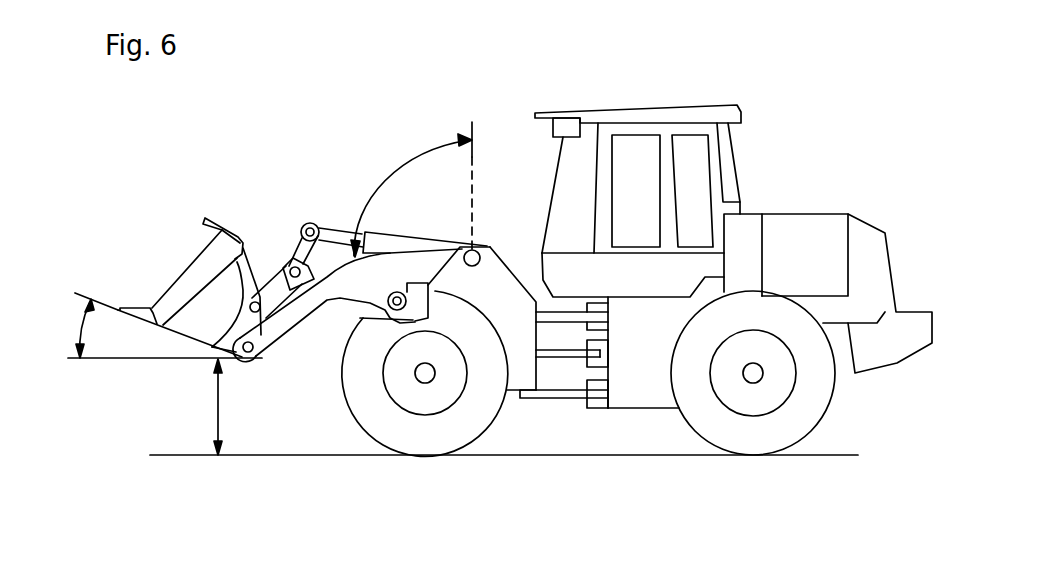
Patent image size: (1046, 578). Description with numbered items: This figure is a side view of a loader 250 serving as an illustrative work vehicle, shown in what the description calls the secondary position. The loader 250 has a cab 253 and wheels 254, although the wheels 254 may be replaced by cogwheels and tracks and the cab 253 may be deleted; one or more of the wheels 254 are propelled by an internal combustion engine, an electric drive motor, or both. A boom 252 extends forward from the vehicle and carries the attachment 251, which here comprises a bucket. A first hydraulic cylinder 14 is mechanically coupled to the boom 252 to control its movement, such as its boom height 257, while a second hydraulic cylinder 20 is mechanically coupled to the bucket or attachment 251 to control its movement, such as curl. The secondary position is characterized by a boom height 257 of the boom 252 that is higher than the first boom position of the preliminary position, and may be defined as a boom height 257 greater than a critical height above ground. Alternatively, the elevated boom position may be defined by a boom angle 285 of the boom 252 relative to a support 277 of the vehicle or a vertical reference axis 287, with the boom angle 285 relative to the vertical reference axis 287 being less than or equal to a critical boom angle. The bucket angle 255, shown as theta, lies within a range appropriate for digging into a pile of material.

The loader 250 is at (853, 85).
The cab 253 is at (677, 105).
The attachment 251 is at (270, 133).
The boom 252 is at (302, 305).
The wheels 254 is at (477, 423).
The bucket angle 255 is at (96, 327).
The boom height 257 is at (218, 405).
The support 277 is at (512, 317).
The boom angle 285 is at (412, 160).
The vertical reference axis 287 is at (483, 157).
The first hydraulic cylinder 14 is at (390, 322).
The second hydraulic cylinder 20 is at (340, 233).